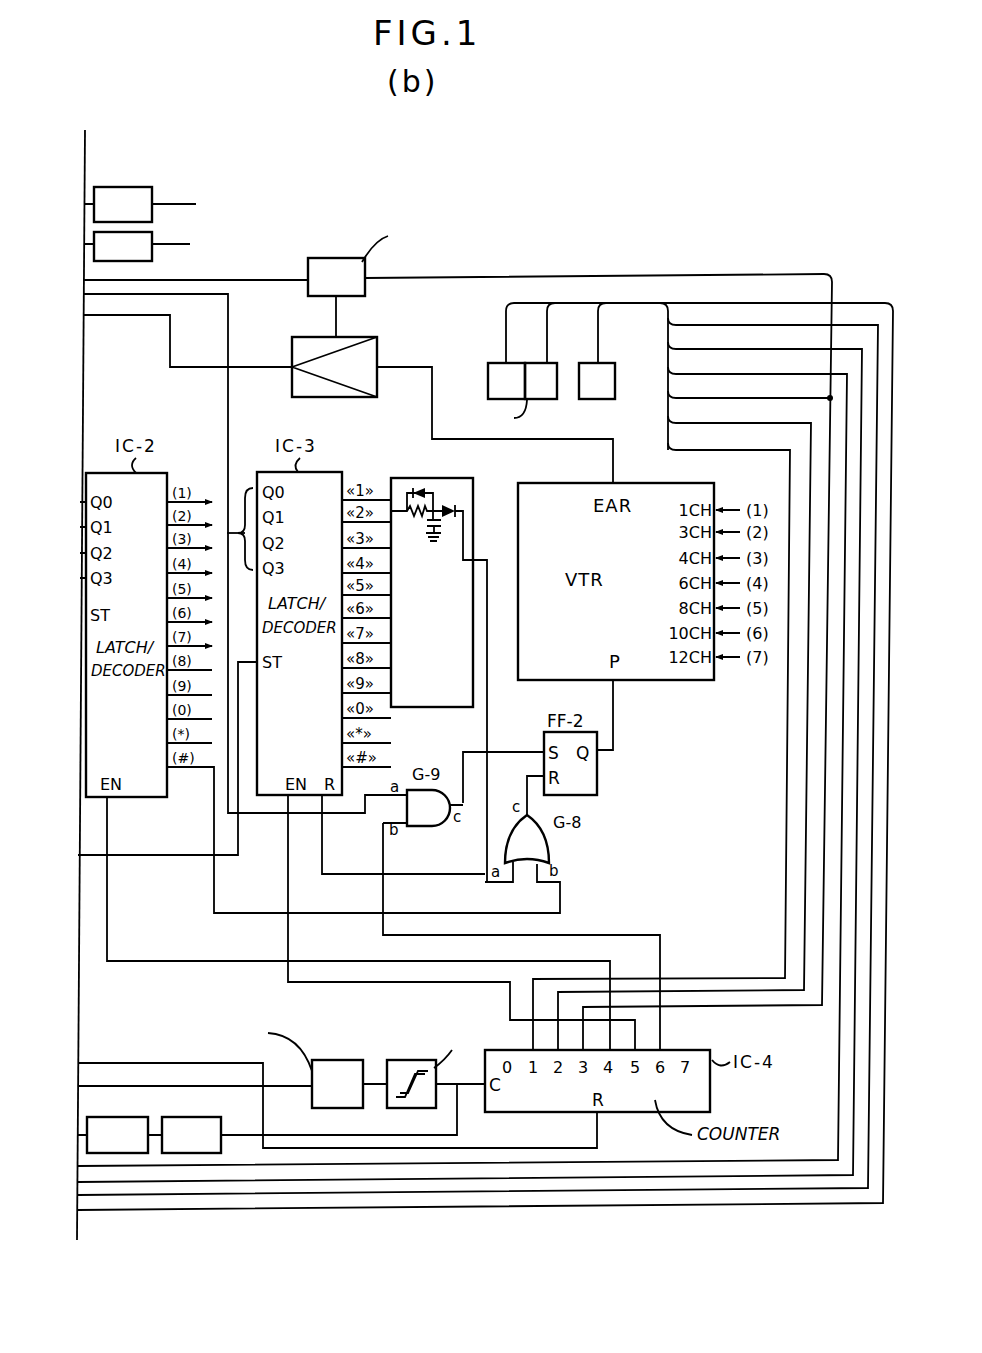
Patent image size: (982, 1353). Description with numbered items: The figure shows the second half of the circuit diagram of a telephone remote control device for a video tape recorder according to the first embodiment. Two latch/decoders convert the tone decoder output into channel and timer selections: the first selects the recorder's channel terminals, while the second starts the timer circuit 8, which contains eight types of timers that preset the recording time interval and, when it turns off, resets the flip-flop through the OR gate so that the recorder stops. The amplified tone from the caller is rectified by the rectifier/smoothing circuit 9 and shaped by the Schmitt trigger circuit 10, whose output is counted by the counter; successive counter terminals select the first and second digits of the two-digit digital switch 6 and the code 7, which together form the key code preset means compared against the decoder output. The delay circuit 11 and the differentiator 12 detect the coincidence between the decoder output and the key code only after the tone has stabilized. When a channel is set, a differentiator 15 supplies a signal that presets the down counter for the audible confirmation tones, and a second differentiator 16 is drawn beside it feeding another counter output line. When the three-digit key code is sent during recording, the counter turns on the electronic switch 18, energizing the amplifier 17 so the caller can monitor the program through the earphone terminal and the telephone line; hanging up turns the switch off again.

The differentiator 15 is at (136, 187).
The differentiator 16 is at (132, 261).
The electronic switch 18 is at (334, 258).
The amplifier 17 is at (372, 338).
The two-digit digital switch 6 is at (521, 362).
The code 7 is at (618, 362).
The timer circuit 8 is at (483, 472).
The rectifier/smoothing circuit 9 is at (338, 1060).
The Schmitt trigger circuit 10 is at (405, 1060).
The delay circuit 11 is at (221, 1122).
The differentiator 12 is at (120, 1117).